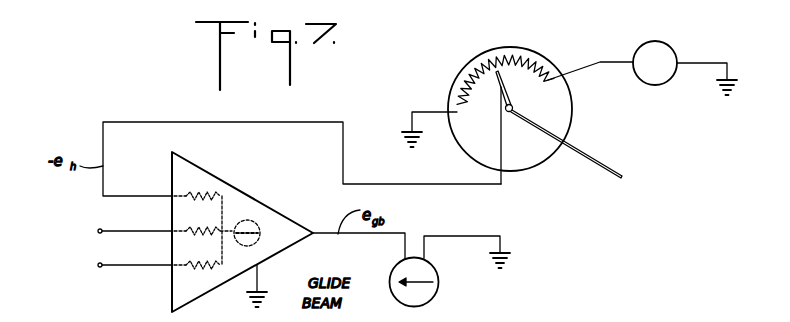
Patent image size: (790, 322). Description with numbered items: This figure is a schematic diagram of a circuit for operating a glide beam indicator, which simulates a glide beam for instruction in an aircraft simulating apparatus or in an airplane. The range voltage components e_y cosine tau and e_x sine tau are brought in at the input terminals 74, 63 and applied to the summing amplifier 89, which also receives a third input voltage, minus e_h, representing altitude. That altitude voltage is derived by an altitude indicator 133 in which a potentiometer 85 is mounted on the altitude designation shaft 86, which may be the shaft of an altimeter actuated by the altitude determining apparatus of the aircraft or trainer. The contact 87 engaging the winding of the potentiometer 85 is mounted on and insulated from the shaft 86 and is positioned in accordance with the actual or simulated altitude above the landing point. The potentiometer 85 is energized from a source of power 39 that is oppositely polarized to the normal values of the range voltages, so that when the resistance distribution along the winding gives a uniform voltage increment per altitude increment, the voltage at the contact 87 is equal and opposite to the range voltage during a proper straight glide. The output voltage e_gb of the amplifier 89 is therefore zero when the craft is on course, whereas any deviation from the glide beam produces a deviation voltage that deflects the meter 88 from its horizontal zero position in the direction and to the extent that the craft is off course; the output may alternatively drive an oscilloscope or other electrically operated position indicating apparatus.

The source of power 39 is at (668, 45).
The input terminal e_x sin gamma 63 is at (100, 268).
The input terminal e_y cos gamma 74 is at (105, 228).
The potentiometer 85 is at (526, 54).
The altitude designation shaft 86 is at (608, 166).
The contact 87 is at (503, 82).
The meter 88 is at (436, 296).
The amplifier 89 is at (252, 198).
The altitude indicator 133 is at (573, 112).